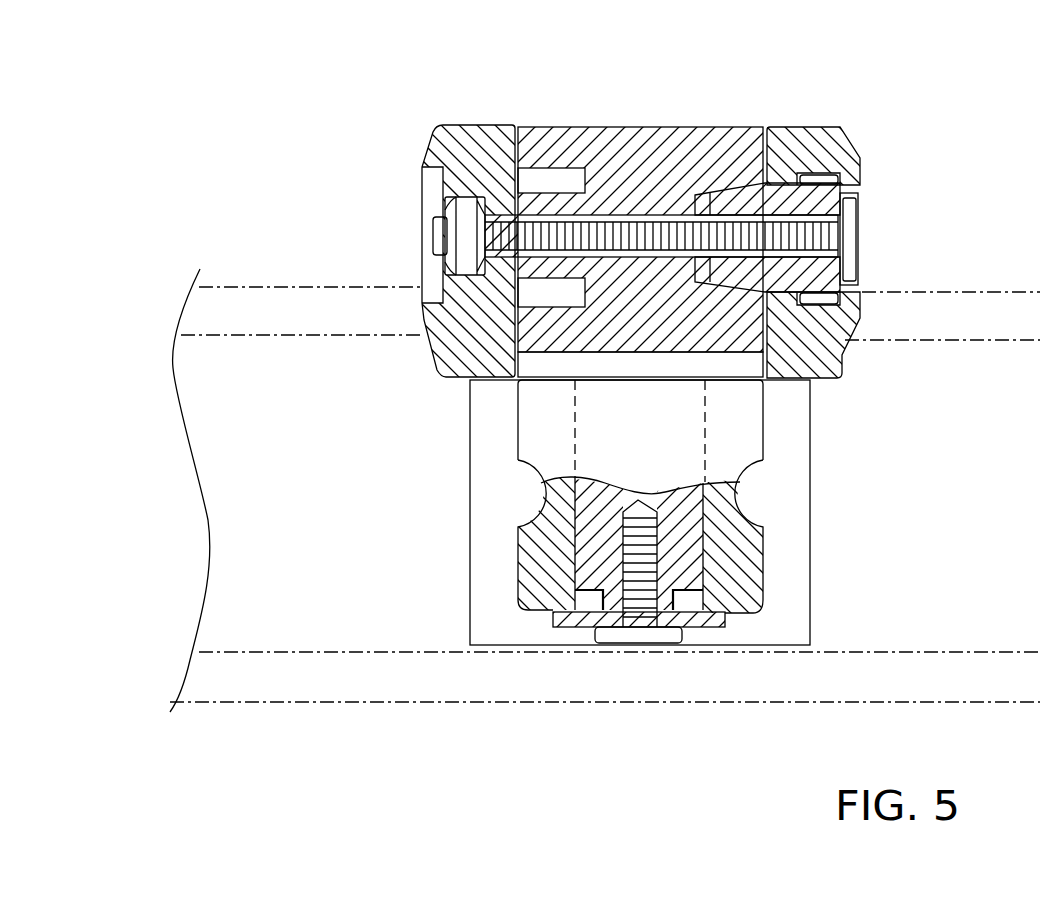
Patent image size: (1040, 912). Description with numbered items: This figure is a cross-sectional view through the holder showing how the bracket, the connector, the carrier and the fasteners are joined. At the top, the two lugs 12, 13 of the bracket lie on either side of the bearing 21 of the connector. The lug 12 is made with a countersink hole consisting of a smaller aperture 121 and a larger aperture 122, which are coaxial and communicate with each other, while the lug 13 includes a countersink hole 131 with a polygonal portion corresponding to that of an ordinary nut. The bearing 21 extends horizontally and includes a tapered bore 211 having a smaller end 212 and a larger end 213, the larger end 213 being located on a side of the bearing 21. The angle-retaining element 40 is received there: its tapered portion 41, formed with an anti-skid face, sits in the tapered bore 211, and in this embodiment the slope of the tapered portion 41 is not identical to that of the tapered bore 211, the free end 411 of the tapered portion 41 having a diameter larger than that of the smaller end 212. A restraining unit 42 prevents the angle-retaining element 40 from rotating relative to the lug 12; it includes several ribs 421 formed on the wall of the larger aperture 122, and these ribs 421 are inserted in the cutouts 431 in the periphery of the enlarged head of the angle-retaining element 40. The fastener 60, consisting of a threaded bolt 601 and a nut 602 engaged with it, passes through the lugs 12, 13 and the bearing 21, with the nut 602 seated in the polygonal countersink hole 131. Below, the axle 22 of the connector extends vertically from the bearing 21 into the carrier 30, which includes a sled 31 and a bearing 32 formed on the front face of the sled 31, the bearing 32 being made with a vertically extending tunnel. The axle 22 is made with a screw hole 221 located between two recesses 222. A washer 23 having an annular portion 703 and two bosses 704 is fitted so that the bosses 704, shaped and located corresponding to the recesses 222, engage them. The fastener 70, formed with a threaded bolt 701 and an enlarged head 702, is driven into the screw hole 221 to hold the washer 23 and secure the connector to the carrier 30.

The lug 12 is at (828, 137).
The smaller aperture 121 is at (795, 172).
The larger aperture 122 is at (850, 306).
The lug 13 is at (438, 128).
The countersink hole 131 is at (477, 196).
The bearing 21 is at (630, 140).
The tapered bore 211 is at (728, 186).
The smaller end 212 is at (703, 203).
The larger end 213 is at (754, 178).
The axle 22 is at (683, 532).
The screw hole 221 is at (655, 493).
The recesses 222 is at (710, 572).
The washer 23 is at (882, 568).
The carrier 30 is at (463, 435).
The sled 31 is at (488, 503).
The bearing 32 is at (530, 596).
The angle-retaining element 40 is at (843, 357).
The tapered portion 41 is at (722, 284).
The free end 411 is at (693, 282).
The restraining unit 42 is at (937, 142).
The ribs 421 is at (845, 150).
The cutouts 431 is at (823, 178).
The fastener 60 is at (860, 227).
The threaded bolt 601 is at (545, 215).
The nut 602 is at (450, 208).
The fastener 70 is at (638, 647).
The threaded bolt 701 is at (600, 592).
The enlarged head 702 is at (683, 633).
The annular portion 703 is at (553, 614).
The bosses 704 is at (710, 594).